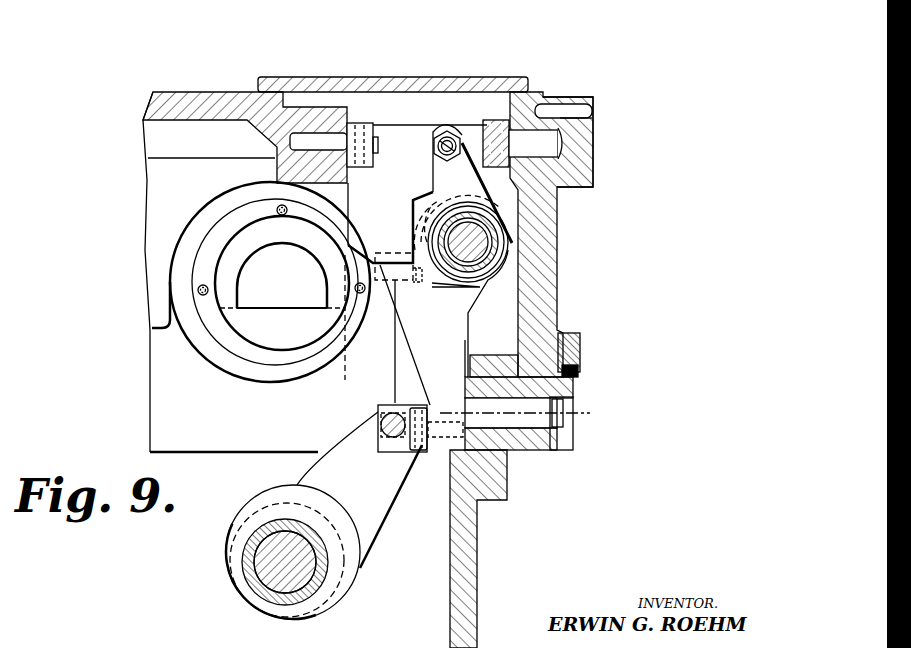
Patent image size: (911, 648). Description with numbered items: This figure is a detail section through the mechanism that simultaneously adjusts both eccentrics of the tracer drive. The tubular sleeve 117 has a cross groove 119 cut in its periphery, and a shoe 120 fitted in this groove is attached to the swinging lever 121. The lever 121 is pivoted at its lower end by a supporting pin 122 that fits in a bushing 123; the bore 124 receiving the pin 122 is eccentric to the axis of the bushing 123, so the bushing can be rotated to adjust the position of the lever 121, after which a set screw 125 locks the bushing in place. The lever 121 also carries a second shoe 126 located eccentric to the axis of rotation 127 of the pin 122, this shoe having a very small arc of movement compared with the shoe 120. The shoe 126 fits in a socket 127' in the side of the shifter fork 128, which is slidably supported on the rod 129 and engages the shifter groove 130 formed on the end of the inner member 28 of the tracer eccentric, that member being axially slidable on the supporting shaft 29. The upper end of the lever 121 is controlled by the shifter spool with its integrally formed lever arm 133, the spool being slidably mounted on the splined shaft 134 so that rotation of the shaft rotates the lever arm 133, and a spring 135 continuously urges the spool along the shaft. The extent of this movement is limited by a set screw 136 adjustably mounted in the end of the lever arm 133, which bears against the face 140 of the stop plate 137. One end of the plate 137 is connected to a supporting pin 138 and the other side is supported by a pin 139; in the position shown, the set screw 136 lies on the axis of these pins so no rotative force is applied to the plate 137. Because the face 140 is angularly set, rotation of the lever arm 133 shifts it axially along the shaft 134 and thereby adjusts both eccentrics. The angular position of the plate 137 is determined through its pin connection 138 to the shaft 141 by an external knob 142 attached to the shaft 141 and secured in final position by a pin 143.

The inner member 28 is at (248, 578).
The supporting shaft 29 is at (263, 558).
The tubular sleeve 117 is at (277, 368).
The cross groove 119 is at (353, 350).
The shoe 120 is at (370, 297).
The swinging lever 121 is at (468, 342).
The supporting pin 122 is at (508, 417).
The bushing 123 is at (535, 375).
The bore 124 is at (543, 390).
The set screw 125 is at (578, 372).
The second shoe 126 is at (414, 455).
The axis of rotation 127 is at (579, 439).
The socket 127' is at (427, 476).
The shifter fork 128 is at (377, 522).
The rod 129 is at (380, 420).
The shifter groove 130 is at (293, 612).
The lever arm 133 is at (466, 150).
The splined shaft 134 is at (488, 242).
The spring 135 is at (500, 235).
The set screw 136 is at (443, 137).
The stop plate 137 is at (398, 140).
The supporting pin 138 is at (516, 135).
The pin 139 is at (322, 142).
The face 140 is at (409, 155).
The shaft 141 is at (540, 102).
The external knob 142 is at (593, 143).
The pin 143 is at (580, 112).